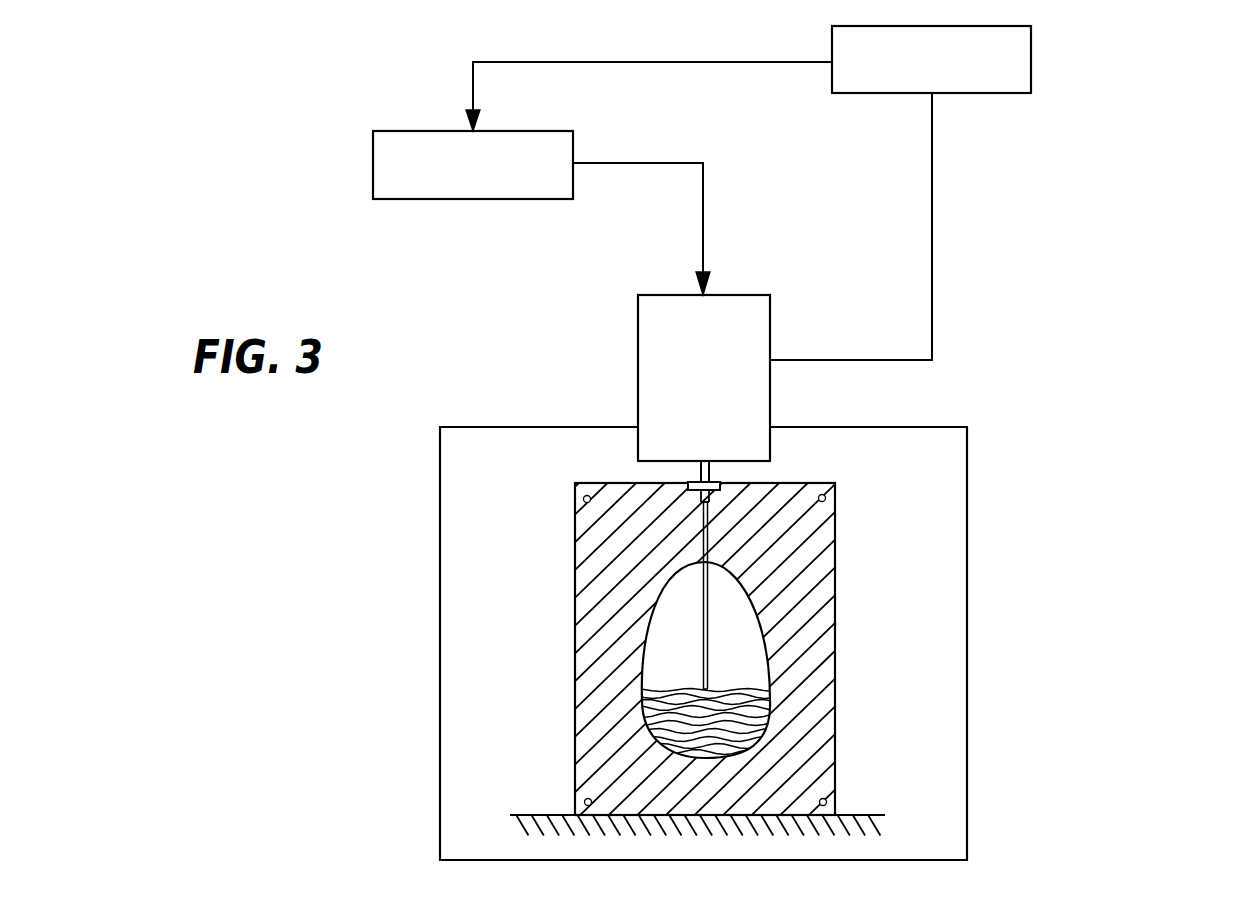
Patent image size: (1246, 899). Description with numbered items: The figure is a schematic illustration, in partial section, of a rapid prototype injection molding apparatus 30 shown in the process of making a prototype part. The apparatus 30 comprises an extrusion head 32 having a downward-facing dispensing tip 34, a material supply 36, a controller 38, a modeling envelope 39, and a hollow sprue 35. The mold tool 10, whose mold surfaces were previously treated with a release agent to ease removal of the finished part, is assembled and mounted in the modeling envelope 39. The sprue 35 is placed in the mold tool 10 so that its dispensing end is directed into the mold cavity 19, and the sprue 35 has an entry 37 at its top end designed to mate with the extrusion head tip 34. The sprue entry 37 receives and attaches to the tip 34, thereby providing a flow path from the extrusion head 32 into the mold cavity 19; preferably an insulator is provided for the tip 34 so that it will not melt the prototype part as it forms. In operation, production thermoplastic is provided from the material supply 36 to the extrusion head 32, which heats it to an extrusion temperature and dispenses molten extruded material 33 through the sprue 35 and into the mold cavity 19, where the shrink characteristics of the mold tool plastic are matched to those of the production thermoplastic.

The rapid prototype injection molding apparatus 30 is at (1082, 225).
The extrusion head 32 is at (638, 356).
The molten extruded material 33 is at (704, 636).
The dispensing tip 34 is at (712, 466).
The hollow sprue 35 is at (705, 548).
The material supply 36 is at (505, 199).
The sprue entry 37 is at (722, 483).
The controller 38 is at (957, 93).
The modeling envelope 39 is at (968, 735).
The mold tool 10 is at (817, 643).
The mold cavity 19 is at (678, 665).